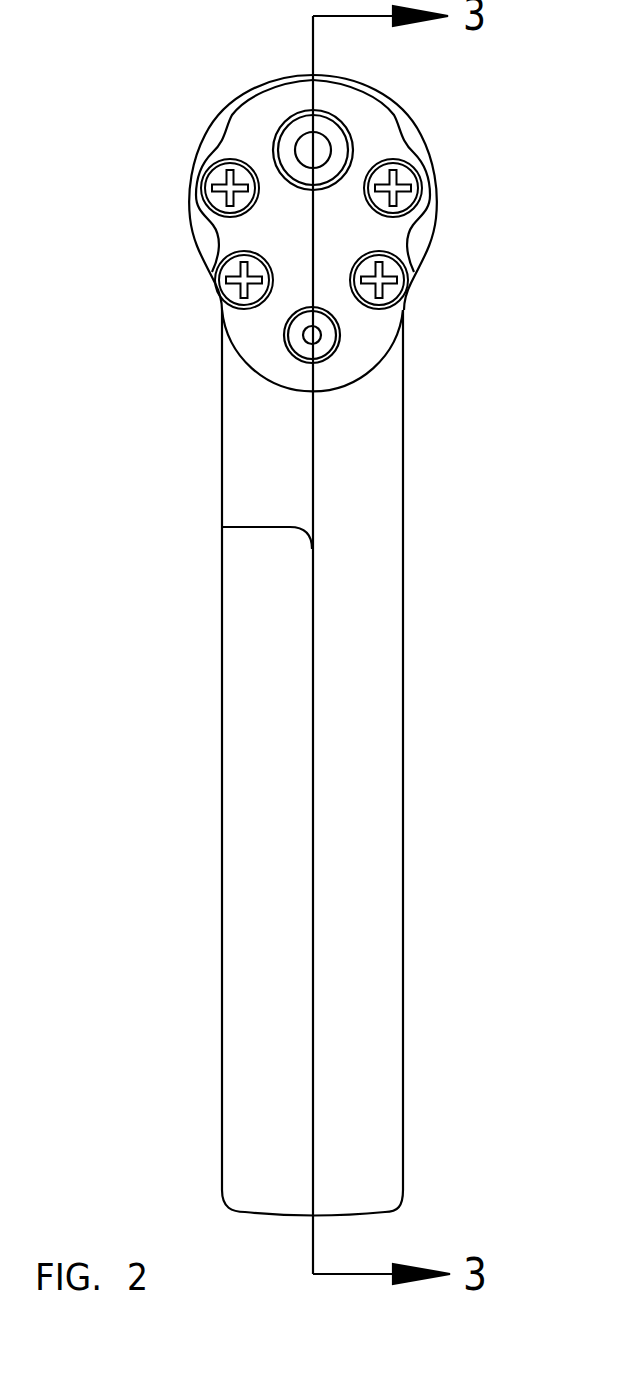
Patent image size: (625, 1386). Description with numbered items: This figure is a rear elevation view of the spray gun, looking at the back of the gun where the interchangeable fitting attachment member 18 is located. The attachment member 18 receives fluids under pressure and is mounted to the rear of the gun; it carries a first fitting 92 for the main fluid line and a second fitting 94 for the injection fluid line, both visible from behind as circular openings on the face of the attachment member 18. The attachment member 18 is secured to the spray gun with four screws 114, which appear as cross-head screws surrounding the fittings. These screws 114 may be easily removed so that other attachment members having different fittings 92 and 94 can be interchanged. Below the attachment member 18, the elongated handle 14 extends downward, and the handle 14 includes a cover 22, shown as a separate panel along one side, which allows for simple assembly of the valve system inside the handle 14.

The handle 14 is at (368, 788).
The attachment member 18 is at (217, 118).
The cover 22 is at (222, 802).
The first fitting 92 is at (337, 146).
The second fitting 94 is at (328, 340).
The screws 114 is at (220, 176).